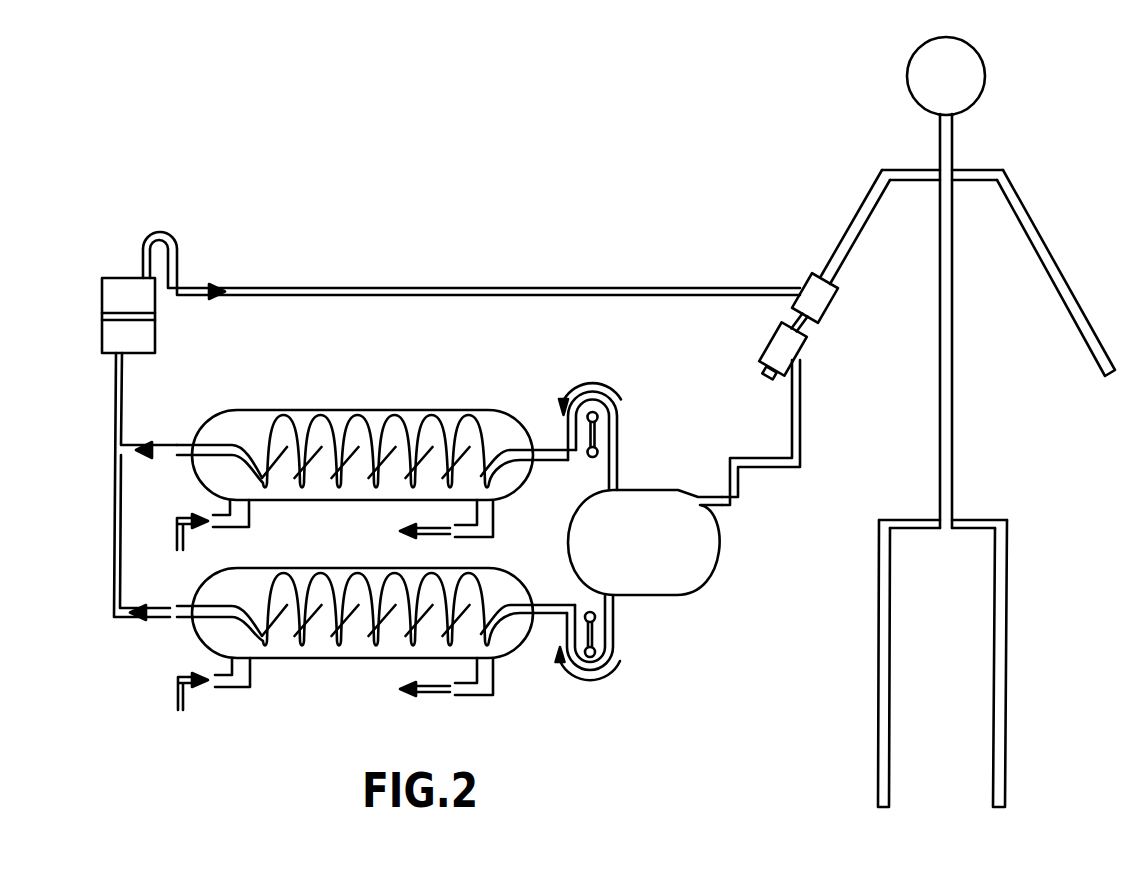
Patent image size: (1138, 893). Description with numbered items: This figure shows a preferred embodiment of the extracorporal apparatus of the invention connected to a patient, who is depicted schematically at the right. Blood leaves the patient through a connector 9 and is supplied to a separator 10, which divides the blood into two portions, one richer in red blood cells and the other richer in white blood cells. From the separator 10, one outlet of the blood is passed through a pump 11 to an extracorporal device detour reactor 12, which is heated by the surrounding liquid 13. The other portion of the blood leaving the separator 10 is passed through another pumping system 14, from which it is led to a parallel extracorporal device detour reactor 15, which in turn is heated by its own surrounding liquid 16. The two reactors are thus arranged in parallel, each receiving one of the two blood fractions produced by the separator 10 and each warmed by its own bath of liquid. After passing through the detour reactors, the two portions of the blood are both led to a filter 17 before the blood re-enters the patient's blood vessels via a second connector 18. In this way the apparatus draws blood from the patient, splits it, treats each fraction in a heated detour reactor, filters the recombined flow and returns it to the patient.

The connector 9 is at (799, 366).
The separator 10 is at (703, 552).
The pump 11 is at (597, 638).
The extracorporal device detour reactor 12 is at (348, 610).
The surrounding liquid 13 is at (215, 689).
The pumping system 14 is at (603, 413).
The parallel extracorporal device detour reactor 15 is at (432, 438).
The surrounding liquid 16 is at (285, 496).
The filter 17 is at (117, 332).
The connector 18 is at (803, 290).